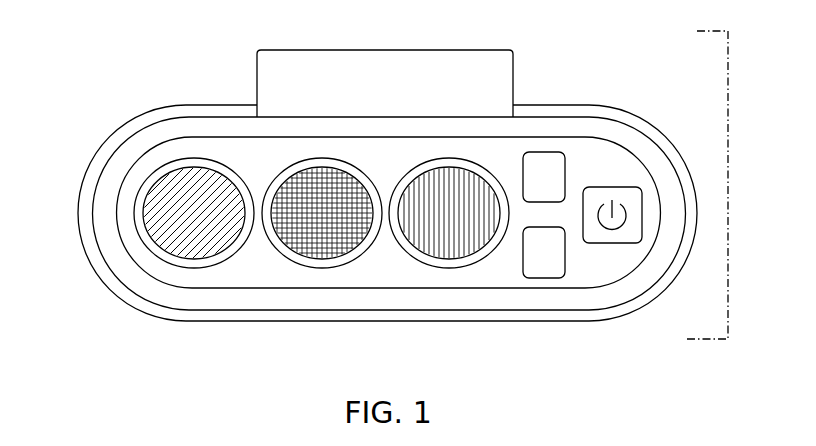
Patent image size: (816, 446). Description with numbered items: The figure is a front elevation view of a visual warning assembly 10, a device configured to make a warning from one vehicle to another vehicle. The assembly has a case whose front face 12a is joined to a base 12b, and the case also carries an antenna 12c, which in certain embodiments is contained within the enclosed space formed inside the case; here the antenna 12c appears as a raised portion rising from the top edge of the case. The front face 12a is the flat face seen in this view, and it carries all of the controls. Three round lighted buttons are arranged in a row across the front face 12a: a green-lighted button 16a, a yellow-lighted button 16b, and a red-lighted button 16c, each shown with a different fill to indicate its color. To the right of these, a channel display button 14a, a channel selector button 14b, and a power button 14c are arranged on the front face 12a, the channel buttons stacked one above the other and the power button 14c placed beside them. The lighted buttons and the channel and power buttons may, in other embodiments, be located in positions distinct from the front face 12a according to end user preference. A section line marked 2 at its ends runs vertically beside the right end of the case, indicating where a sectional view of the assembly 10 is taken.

The visual warning assembly 10 is at (95, 58).
The front face 12a is at (236, 281).
The base 12b is at (545, 104).
The antenna 12c is at (442, 88).
The channel display button 14a is at (566, 165).
The channel selector button 14b is at (543, 279).
The power button 14c is at (610, 244).
The green-lighted button 16a is at (185, 168).
The yellow-lighted button 16b is at (300, 262).
The red-lighted button 16c is at (456, 255).
The section line 2- 2 is at (688, 31).